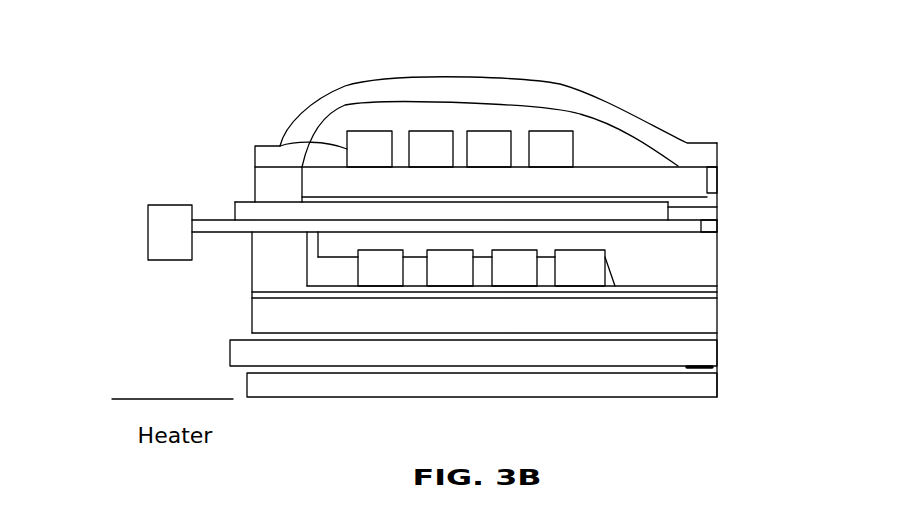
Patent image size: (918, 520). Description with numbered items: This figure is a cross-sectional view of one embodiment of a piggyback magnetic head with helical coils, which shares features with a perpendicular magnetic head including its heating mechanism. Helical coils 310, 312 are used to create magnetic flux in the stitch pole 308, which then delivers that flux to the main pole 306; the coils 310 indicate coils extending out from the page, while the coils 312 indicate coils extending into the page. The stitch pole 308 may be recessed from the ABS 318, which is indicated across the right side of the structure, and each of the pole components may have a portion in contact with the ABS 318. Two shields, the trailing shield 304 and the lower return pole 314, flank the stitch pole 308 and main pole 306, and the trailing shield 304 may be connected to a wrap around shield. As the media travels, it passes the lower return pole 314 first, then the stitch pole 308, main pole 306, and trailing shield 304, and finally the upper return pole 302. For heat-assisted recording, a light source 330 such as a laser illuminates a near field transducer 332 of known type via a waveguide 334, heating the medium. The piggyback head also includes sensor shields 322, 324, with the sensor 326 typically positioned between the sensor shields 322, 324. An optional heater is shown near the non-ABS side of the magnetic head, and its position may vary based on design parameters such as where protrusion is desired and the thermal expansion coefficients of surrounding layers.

The upper return pole 302 is at (642, 110).
The trailing shield 304 is at (717, 183).
The main pole 306 is at (717, 202).
The stitch pole 308 is at (248, 201).
The helical coils 310 is at (280, 146).
The helical coils 312 is at (597, 249).
The lower return pole 314 is at (484, 312).
The ABS 318 is at (728, 302).
The sensor shield 322 is at (231, 363).
The sensor shield 324 is at (247, 383).
The sensor 326 is at (712, 367).
The light source 330 is at (148, 228).
The near field transducer 332 is at (717, 227).
The waveguide 334 is at (217, 218).